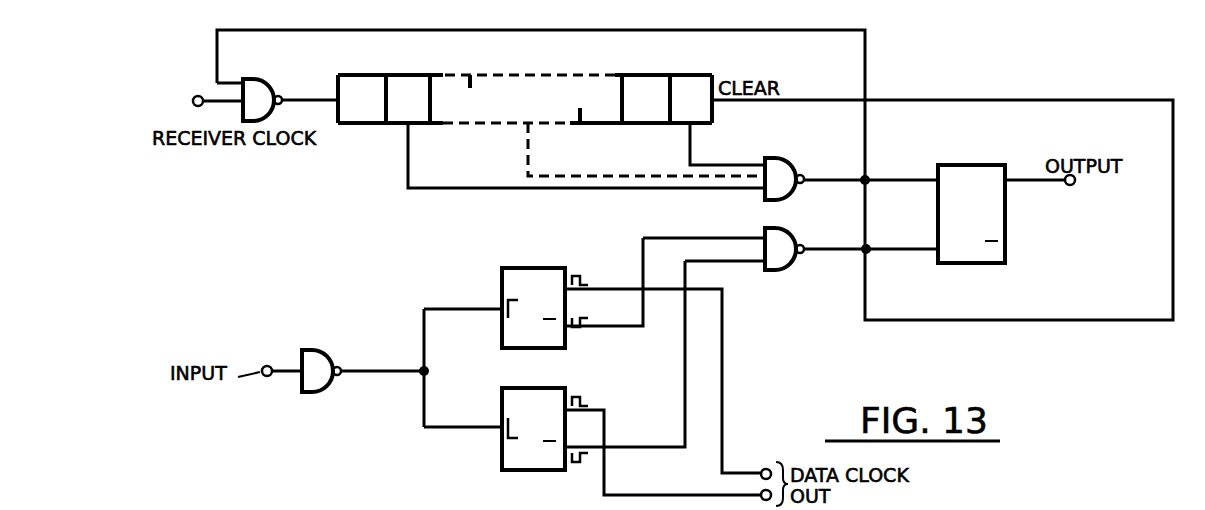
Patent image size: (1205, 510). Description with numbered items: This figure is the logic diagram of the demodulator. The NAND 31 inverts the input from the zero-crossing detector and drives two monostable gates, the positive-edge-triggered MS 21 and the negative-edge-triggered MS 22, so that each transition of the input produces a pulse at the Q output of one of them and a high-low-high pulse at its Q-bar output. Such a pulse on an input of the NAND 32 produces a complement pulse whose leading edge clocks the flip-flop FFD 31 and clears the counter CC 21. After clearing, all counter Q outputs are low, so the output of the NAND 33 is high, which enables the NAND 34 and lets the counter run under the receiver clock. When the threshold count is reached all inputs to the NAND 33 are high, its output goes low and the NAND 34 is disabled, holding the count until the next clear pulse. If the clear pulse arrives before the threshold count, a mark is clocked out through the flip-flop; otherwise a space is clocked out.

The NAND gate 34 is at (278, 85).
The counter 21 is at (525, 199).
The NAND gate 33 is at (788, 167).
The NAND gate 32 is at (788, 237).
The NAND gate 31 is at (650, 278).
The monostable gate 22 is at (545, 417).